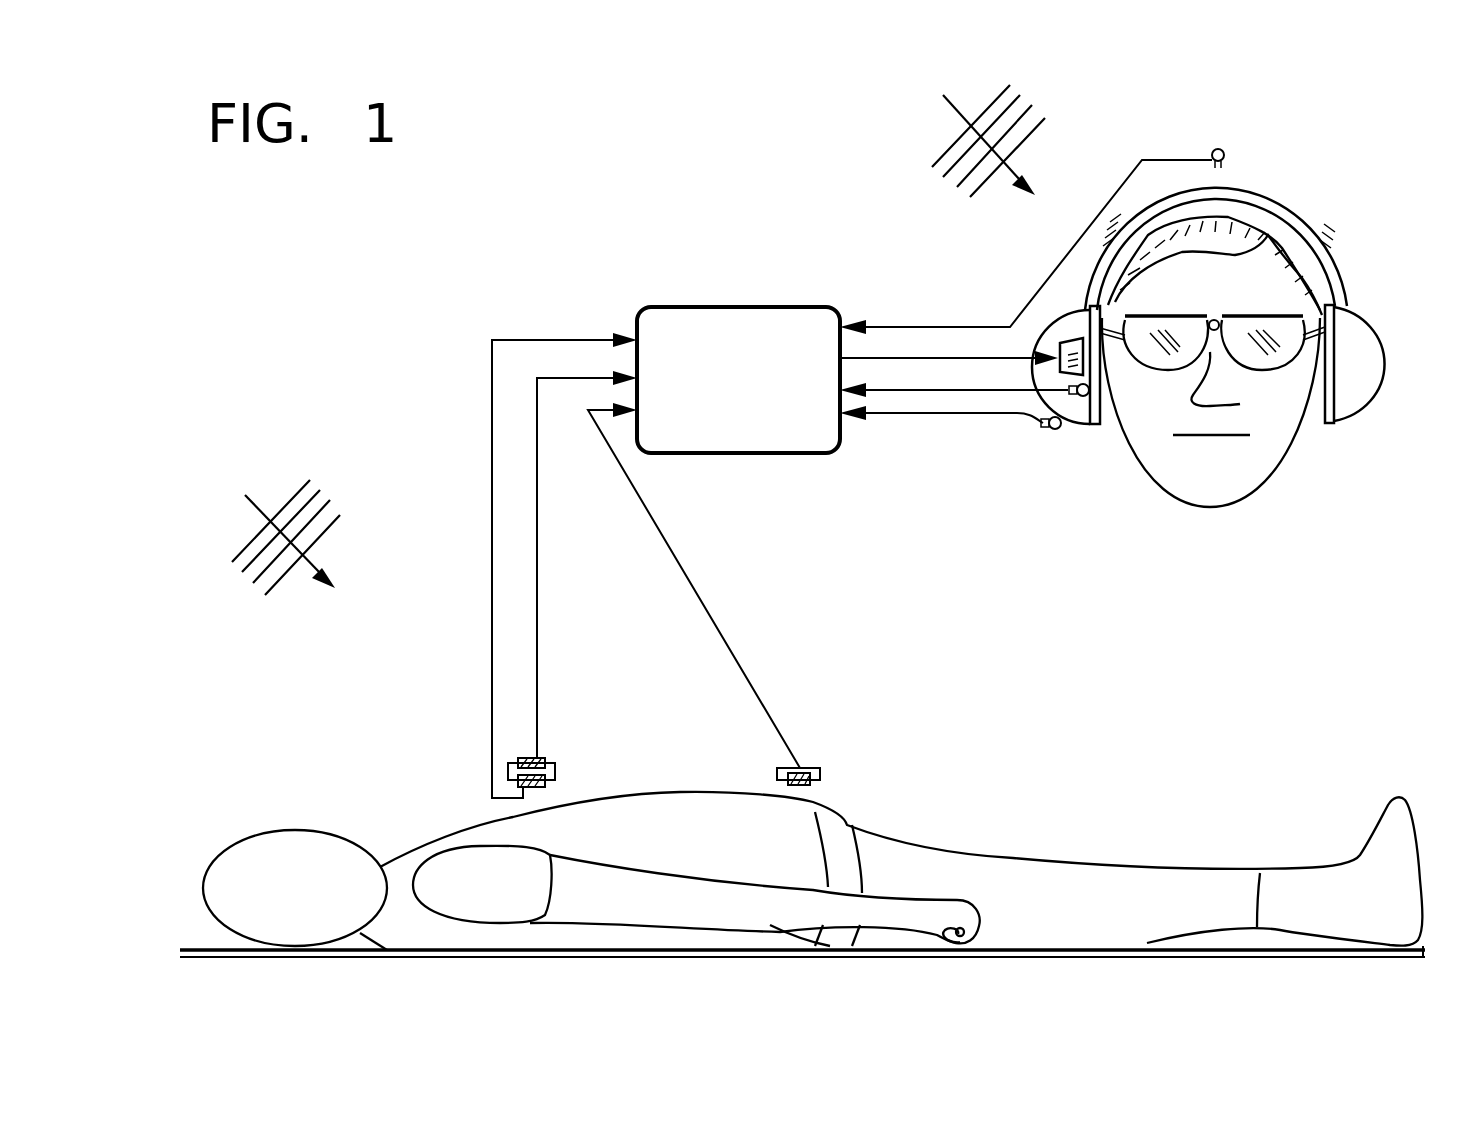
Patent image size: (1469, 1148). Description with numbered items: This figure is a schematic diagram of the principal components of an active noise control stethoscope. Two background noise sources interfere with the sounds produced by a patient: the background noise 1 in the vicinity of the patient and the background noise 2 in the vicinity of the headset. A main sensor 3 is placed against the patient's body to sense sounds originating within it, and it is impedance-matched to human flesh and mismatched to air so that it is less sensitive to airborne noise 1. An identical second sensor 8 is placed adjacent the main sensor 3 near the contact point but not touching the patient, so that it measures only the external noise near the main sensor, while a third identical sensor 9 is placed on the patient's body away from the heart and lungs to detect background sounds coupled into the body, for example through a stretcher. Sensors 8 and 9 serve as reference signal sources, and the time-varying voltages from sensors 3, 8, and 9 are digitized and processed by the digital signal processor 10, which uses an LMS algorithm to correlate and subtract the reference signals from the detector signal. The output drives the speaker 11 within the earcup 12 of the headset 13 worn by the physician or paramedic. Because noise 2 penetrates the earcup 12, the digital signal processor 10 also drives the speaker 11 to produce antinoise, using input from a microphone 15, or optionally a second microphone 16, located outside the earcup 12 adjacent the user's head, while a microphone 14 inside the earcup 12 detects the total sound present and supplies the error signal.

The background noise 1 is at (308, 462).
The background noise 2 is at (1072, 97).
The main sensor 3 is at (545, 787).
The second sensor 8 is at (543, 763).
The third sensor 9 is at (808, 768).
The digital signal processor 10 is at (662, 320).
The speaker 11 is at (1063, 340).
The earcup 12 is at (1073, 428).
The headset 13 is at (1278, 178).
The microphone 14 is at (1085, 400).
The microphone 15 is at (1224, 157).
The second microphone 16 is at (1048, 432).